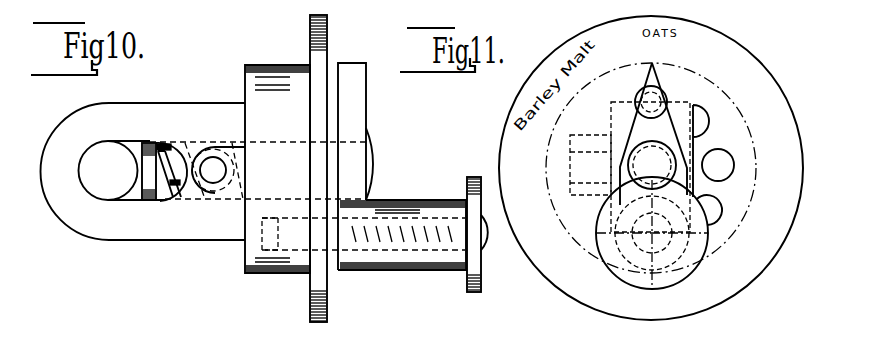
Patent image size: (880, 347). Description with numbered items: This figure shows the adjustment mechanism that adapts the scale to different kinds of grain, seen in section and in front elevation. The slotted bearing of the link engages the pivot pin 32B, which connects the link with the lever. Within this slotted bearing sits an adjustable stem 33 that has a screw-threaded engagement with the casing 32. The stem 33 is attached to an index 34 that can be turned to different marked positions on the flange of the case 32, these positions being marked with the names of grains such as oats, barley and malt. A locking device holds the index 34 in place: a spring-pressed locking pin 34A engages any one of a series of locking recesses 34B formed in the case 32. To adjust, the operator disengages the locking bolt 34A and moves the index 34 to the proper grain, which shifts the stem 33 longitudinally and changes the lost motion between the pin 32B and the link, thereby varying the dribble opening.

In FIG. 10, the casing 32 is at (327, 37).
In FIG. 11, the casing 32 is at (770, 84).
In FIG. 10, the adjustable stem 33 is at (170, 147).
In FIG. 11, the adjustable stem 33 is at (668, 135).
In FIG. 10, the index 34 is at (357, 93).
In FIG. 11, the index 34 is at (650, 79).
In FIG. 10, the pivot pin 32B is at (108, 200).
In FIG. 10, the locking recesses 34B is at (269, 250).
In FIG. 11, the locking recesses 34B is at (725, 173).
In FIG. 10, the spring-pressed locking pin 34A is at (413, 250).
In FIG. 11, the spring-pressed locking pin 34A is at (670, 247).